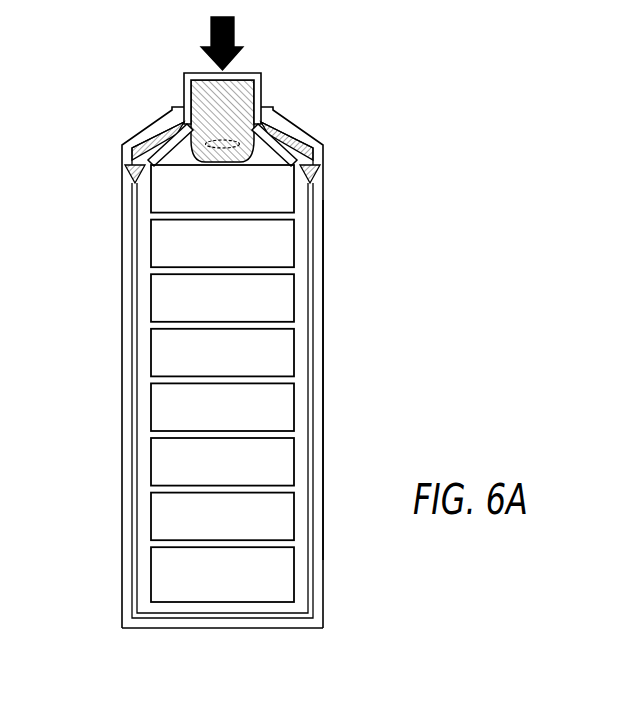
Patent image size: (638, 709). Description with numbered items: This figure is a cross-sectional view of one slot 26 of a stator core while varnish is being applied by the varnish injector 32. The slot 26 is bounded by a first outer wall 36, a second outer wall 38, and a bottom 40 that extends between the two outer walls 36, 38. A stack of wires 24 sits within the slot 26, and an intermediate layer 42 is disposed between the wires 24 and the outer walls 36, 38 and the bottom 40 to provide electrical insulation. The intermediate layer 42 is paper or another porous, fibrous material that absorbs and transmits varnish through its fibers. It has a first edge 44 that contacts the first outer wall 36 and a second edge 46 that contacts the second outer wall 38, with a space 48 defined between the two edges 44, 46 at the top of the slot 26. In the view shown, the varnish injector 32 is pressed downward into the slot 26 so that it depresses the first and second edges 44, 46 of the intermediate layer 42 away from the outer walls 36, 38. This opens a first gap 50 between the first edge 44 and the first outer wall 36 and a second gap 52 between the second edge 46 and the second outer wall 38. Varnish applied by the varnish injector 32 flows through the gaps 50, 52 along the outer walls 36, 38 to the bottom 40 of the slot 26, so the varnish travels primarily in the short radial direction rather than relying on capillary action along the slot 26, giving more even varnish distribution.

The wires 24 is at (160, 456).
The slot 26 is at (233, 148).
The varnish injector 32 is at (189, 70).
The first outer wall 36 is at (122, 363).
The second outer wall 38 is at (323, 323).
The bottom 40 is at (165, 628).
The intermediate layer 42 is at (139, 258).
The first edge 44 is at (163, 152).
The second edge 46 is at (288, 157).
The space 48 is at (213, 144).
The first gap 50 is at (167, 140).
The second gap 52 is at (280, 142).